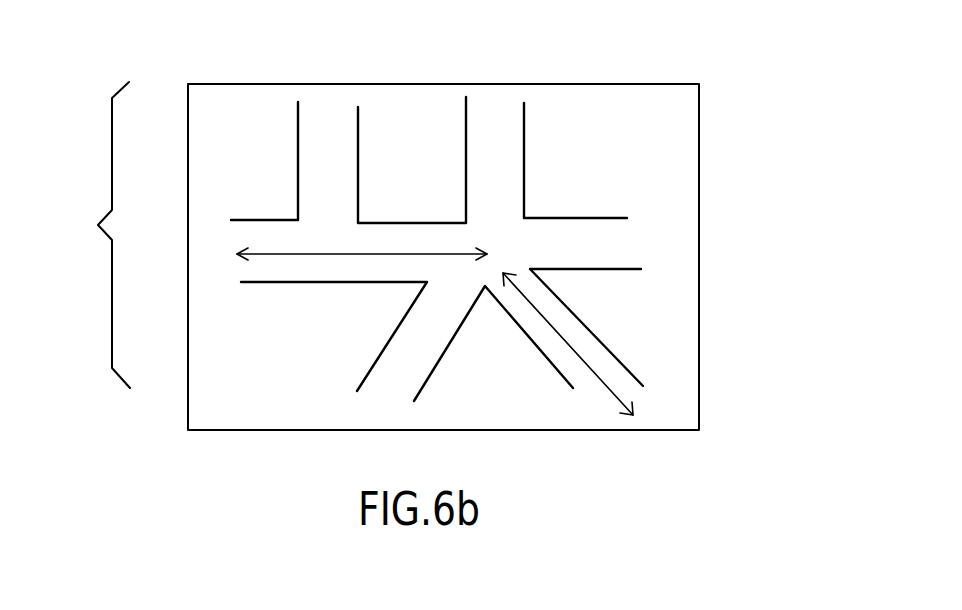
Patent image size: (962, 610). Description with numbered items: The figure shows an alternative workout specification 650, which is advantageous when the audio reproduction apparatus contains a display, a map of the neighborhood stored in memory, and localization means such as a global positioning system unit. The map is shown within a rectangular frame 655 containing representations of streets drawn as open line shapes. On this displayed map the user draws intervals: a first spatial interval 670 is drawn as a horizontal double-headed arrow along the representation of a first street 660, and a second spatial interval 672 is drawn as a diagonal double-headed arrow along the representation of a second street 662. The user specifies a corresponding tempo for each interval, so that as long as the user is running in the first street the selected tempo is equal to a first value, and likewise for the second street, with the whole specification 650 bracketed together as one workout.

The alternative workout specification 650 is at (69, 237).
The panel boundary 655 is at (700, 117).
The representation of a first street 660 is at (262, 228).
The representation of a second street 662 is at (600, 337).
The first spatial interval 670 is at (317, 257).
The second spatial interval 672 is at (535, 324).